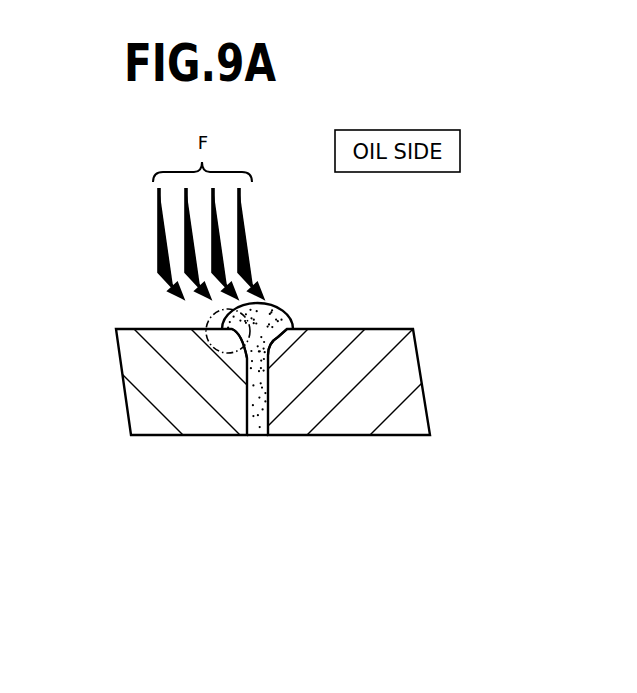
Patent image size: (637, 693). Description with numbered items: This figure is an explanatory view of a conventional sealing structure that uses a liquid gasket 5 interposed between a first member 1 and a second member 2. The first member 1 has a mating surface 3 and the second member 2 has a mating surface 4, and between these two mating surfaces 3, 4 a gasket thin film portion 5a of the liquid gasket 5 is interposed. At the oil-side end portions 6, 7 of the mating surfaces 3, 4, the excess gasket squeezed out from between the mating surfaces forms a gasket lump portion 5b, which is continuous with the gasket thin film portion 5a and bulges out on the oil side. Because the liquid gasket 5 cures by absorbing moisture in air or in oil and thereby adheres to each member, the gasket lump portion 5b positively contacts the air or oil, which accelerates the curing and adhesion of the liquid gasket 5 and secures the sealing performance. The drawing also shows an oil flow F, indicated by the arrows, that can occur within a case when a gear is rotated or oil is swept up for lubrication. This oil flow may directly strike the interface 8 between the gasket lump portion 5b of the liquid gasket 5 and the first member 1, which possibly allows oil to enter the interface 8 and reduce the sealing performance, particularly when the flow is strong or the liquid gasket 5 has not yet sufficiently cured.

The first member 1 is at (150, 452).
The second member 2 is at (393, 456).
The mating surface 3 is at (256, 388).
The mating surface 4 is at (262, 405).
The liquid gasket 5 is at (280, 398).
The gasket thin film portion 5a is at (254, 420).
The gasket lump portion 5b is at (272, 315).
The oil-side end portion 6 is at (243, 352).
The oil-side end portion 7 is at (268, 352).
The interface 8 is at (196, 314).